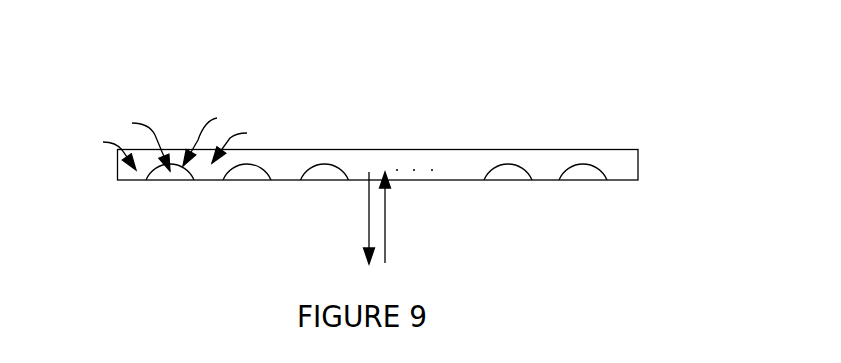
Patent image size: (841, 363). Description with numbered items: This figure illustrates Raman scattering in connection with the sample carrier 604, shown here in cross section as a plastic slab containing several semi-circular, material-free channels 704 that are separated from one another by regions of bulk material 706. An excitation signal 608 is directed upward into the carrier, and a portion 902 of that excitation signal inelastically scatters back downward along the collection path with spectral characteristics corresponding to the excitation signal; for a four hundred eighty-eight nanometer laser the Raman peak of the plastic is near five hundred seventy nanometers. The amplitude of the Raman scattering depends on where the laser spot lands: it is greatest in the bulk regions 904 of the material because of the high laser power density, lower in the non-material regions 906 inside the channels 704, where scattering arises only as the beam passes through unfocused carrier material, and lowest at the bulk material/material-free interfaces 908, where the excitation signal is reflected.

The sample carrier 604 is at (638, 163).
The channels 704 is at (172, 180).
The bulk material 706 is at (245, 144).
The bulk regions 904 is at (102, 152).
The non-material regions 906 is at (132, 143).
The interfaces 908 is at (219, 138).
The portion of the excitation signal 902 is at (369, 212).
The excitation signal 608 is at (385, 212).